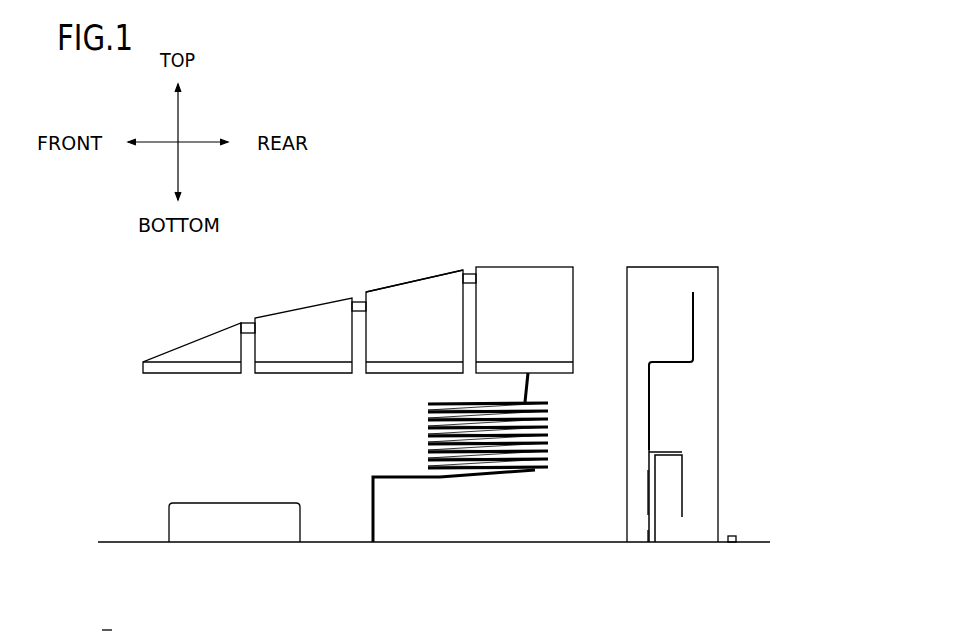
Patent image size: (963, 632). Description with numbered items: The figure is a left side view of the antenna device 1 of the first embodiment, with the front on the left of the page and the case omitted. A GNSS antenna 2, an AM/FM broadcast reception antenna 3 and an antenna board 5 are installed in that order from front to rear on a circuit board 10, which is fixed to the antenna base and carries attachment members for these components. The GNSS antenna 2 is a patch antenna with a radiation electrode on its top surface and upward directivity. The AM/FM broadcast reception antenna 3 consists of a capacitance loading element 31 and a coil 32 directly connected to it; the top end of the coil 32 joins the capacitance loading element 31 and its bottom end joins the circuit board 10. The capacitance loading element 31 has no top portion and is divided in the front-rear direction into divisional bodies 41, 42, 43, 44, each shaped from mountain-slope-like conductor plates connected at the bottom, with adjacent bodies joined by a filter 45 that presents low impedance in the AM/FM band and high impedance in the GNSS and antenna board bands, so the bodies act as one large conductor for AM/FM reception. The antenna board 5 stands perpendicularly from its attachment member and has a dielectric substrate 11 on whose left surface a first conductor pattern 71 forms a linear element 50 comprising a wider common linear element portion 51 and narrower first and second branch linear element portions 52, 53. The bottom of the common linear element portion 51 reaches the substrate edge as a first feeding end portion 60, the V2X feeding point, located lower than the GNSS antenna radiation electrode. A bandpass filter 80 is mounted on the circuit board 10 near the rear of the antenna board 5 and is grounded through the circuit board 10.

The antenna device 1 is at (192, 620).
The GNSS antenna 2 is at (218, 523).
The AM/FM broadcast reception antenna 3 is at (377, 382).
The antenna board 5 is at (665, 267).
The circuit board 10 is at (760, 540).
The dielectric substrate 11 is at (710, 332).
The capacitance loading element 31 is at (378, 288).
The coil 32 is at (550, 443).
The divisional body 41 is at (197, 350).
The divisional body 42 is at (297, 312).
The divisional body 43 is at (430, 275).
The divisional body 44 is at (535, 267).
The filter 45 is at (248, 323).
The linear element 50 is at (648, 503).
The common linear element portion 51 is at (648, 482).
The first branch linear element portion 52 is at (695, 298).
The second branch linear element portion 53 is at (682, 467).
The first feeding end portion 60 is at (652, 543).
The first conductor pattern 71 is at (652, 410).
The bandpass filter 80 is at (728, 542).